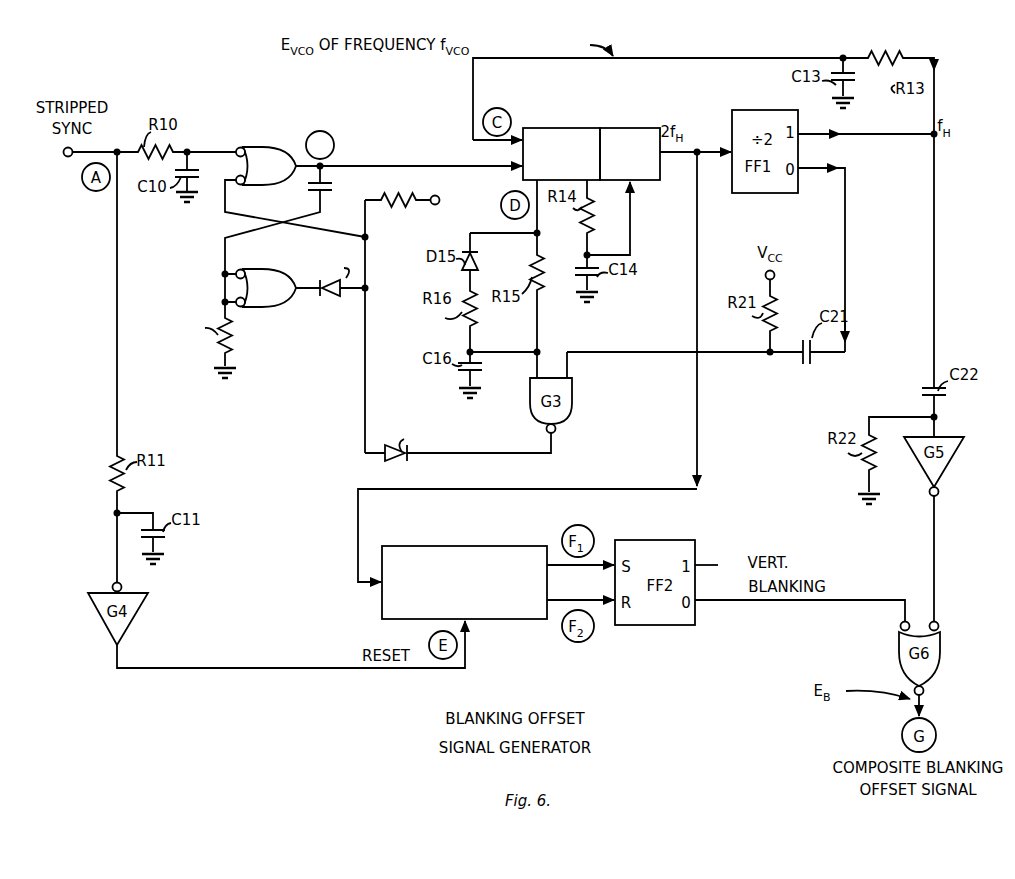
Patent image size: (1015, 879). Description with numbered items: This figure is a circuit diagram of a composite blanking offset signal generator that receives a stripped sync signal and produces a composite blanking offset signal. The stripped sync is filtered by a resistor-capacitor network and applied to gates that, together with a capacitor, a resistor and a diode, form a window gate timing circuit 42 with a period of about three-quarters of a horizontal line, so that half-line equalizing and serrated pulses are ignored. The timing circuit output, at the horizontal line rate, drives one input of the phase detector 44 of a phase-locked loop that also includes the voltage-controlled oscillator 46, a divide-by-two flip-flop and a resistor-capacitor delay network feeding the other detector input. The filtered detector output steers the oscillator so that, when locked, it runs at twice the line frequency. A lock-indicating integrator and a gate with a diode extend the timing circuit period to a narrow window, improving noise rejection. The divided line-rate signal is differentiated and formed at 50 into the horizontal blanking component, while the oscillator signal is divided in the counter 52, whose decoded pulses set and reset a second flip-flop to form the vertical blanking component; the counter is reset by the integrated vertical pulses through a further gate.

The window gate timing circuit 42 is at (286, 446).
The phase detector 44 is at (564, 128).
The voltage-controlled oscillator 46 is at (632, 128).
The horizontal blanking forming point 50 is at (940, 550).
The divide-by-525 counter 52 is at (460, 546).